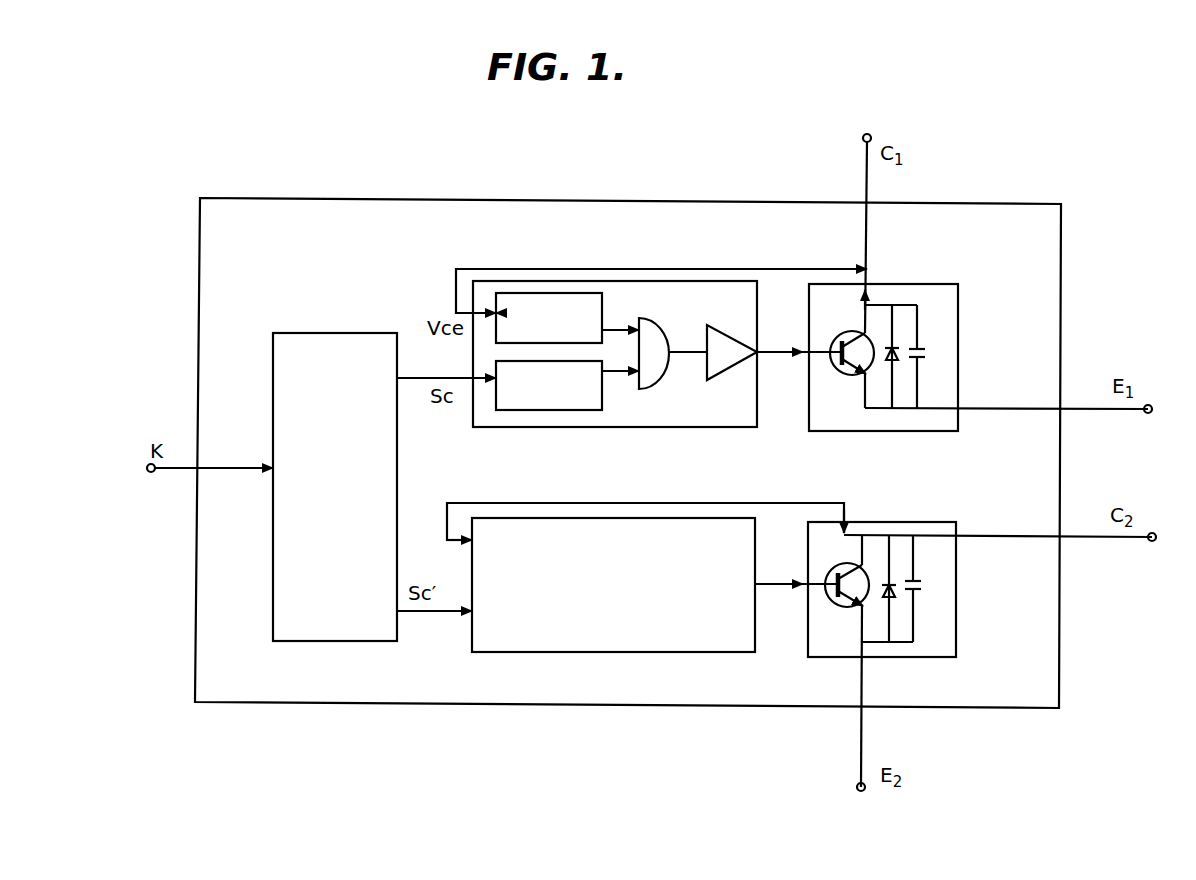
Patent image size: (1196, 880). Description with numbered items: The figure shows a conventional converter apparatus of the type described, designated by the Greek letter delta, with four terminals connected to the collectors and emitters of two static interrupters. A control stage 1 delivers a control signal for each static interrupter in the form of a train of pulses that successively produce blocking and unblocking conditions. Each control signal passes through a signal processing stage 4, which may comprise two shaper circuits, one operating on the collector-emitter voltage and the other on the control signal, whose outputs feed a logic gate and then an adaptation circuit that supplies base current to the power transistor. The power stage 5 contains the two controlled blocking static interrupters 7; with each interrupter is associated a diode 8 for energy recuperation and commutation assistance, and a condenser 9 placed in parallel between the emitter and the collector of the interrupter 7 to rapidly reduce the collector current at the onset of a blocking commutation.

The control stage 1 is at (343, 332).
The signal processing stage 4 is at (680, 423).
The power stage 5 is at (848, 431).
The static interrupter 7 is at (847, 379).
The diode 8 is at (889, 346).
The condenser 9 is at (922, 352).